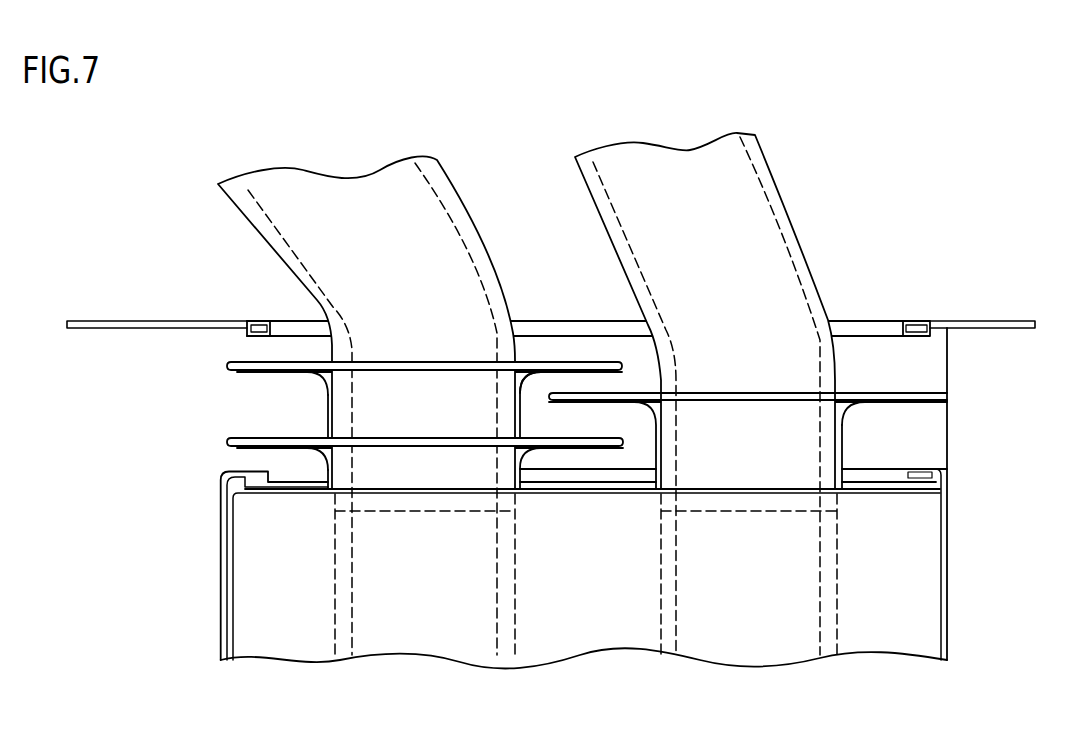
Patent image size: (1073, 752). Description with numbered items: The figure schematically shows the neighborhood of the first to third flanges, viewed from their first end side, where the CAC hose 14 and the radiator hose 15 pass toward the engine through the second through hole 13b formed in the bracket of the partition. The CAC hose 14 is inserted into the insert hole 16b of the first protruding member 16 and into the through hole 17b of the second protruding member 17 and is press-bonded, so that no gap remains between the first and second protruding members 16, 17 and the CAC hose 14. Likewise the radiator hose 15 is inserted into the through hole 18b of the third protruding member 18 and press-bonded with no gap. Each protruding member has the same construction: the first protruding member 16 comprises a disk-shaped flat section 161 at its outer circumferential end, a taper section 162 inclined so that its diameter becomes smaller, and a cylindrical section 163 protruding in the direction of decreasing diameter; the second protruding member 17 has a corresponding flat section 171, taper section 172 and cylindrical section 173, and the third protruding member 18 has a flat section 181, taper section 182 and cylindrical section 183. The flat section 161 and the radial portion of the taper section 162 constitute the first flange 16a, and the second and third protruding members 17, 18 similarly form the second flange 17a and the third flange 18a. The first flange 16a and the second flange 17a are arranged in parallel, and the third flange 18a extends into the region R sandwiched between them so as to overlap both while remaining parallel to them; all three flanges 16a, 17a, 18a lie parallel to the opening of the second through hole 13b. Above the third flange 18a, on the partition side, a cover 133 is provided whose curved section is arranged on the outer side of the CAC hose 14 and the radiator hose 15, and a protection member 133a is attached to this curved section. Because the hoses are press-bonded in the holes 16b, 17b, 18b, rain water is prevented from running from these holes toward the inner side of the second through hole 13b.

The second through hole 13b is at (885, 470).
The CAC hose 14 is at (358, 210).
The radiator hose 15 is at (680, 182).
The first protruding member 16 is at (373, 390).
The first flange 16a is at (556, 362).
The insert hole 16b is at (333, 418).
The flat section 161 is at (238, 362).
The taper section 162 is at (322, 374).
The cylindrical section 163 is at (345, 398).
The second protruding member 17 is at (370, 476).
The second flange 17a is at (582, 437).
The through hole 17b is at (333, 470).
The flat section 171 is at (235, 439).
The taper section 172 is at (323, 454).
The cylindrical section 173 is at (323, 485).
The third protruding member 18 is at (793, 432).
The third flange 18a is at (608, 392).
The through hole 18b is at (840, 453).
The flat section 181 is at (925, 397).
The taper section 182 is at (850, 410).
The cylindrical section 183 is at (808, 470).
The cover 133 is at (995, 321).
The protection member 133a is at (866, 321).
The region R is at (548, 378).